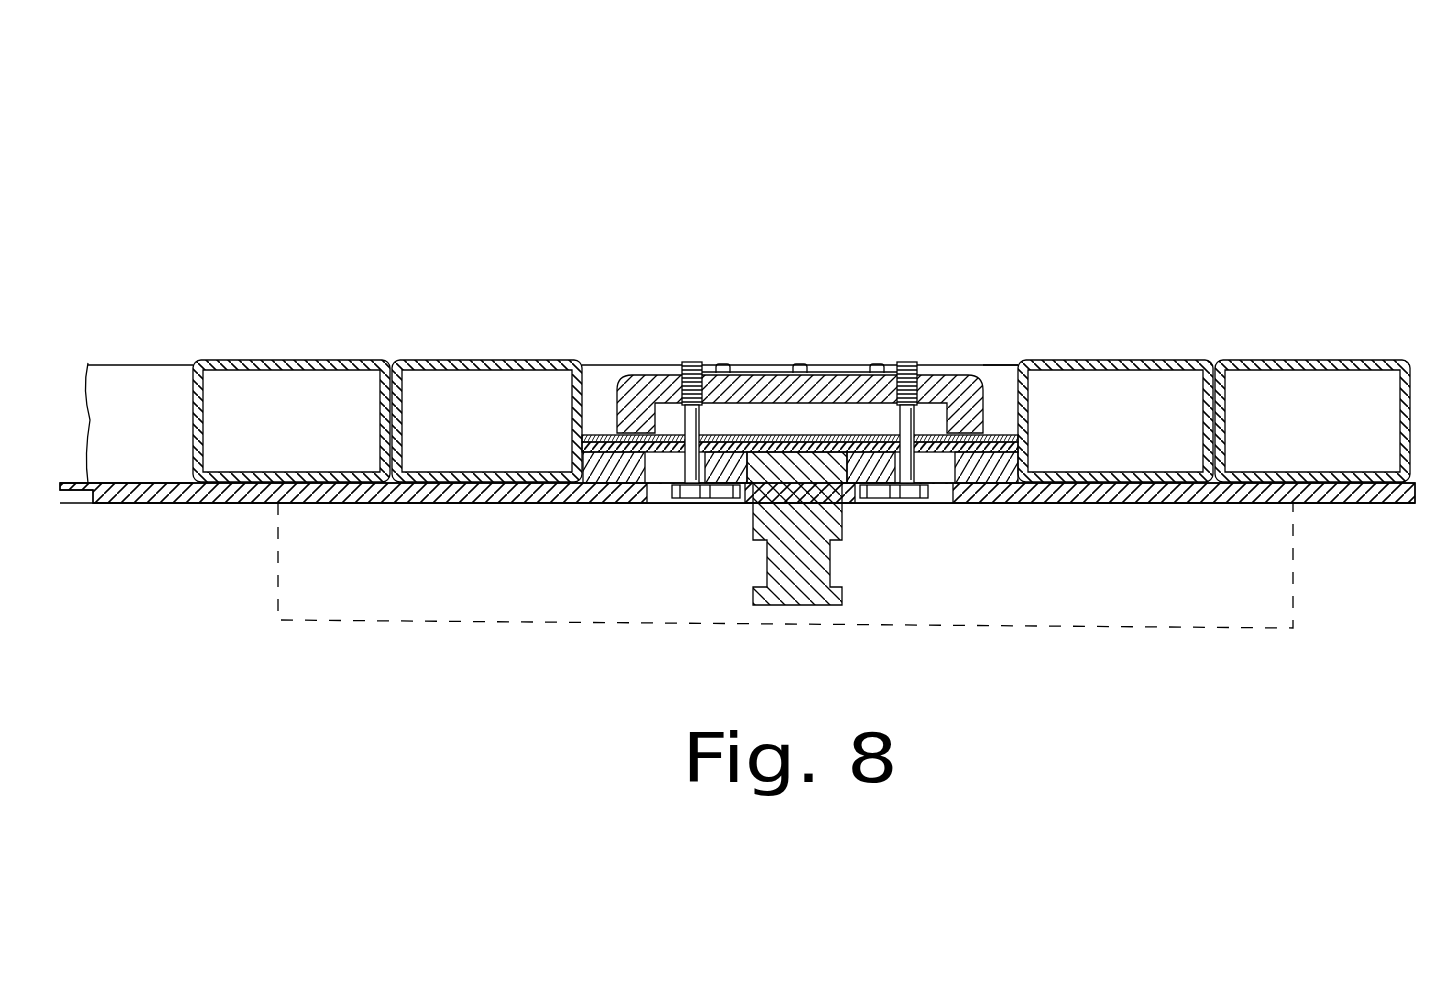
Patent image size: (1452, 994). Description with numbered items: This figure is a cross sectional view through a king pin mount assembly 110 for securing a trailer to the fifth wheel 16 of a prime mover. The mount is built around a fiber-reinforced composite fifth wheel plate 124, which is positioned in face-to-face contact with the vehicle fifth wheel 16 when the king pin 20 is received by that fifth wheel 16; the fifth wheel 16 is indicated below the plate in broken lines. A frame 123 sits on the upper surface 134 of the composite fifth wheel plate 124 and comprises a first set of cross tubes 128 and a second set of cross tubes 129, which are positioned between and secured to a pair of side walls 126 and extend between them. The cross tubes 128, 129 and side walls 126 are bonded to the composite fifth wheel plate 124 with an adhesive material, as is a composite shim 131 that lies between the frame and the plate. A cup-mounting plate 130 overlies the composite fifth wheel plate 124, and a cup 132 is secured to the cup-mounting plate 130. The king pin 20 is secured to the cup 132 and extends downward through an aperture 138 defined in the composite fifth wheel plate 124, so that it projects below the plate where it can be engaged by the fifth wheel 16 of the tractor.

The panel assembly 110 is at (374, 132).
The frame 123 is at (1180, 207).
The composite fifth wheel plate 124 is at (348, 503).
The side walls 126 is at (607, 372).
The first set of cross tubes 128 is at (478, 360).
The second set of cross tubes 129 is at (270, 360).
The cup-mounting plate 130 is at (585, 437).
The composite shim 131 is at (590, 452).
The cup 132 is at (663, 370).
The upper surface 134 is at (143, 480).
The aperture 138 is at (668, 503).
The fifth wheel 16 is at (1300, 563).
The king pin 20 is at (810, 593).